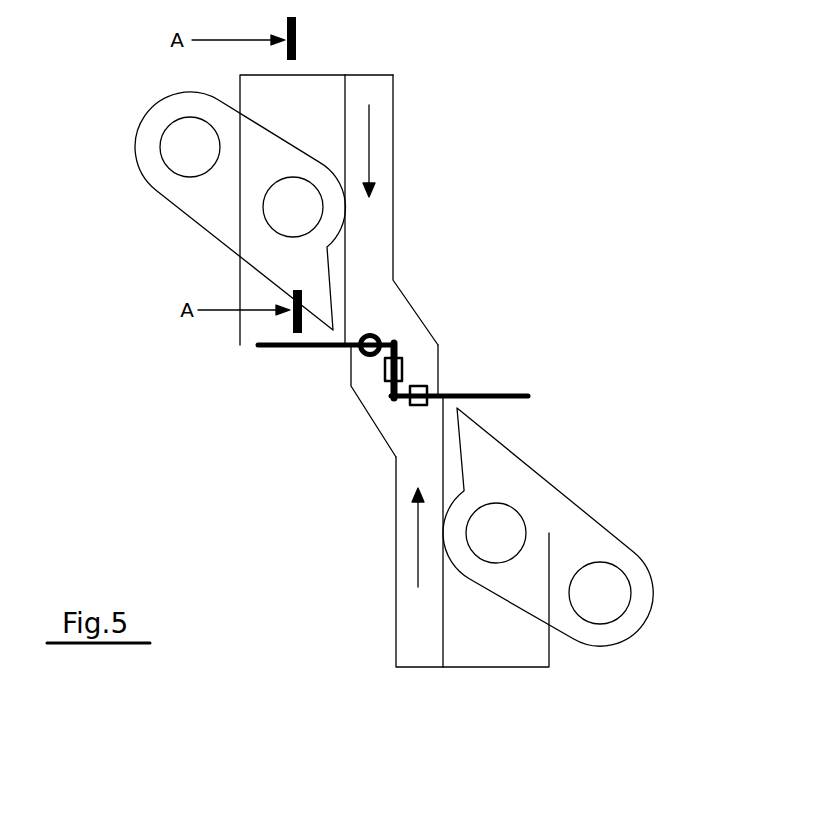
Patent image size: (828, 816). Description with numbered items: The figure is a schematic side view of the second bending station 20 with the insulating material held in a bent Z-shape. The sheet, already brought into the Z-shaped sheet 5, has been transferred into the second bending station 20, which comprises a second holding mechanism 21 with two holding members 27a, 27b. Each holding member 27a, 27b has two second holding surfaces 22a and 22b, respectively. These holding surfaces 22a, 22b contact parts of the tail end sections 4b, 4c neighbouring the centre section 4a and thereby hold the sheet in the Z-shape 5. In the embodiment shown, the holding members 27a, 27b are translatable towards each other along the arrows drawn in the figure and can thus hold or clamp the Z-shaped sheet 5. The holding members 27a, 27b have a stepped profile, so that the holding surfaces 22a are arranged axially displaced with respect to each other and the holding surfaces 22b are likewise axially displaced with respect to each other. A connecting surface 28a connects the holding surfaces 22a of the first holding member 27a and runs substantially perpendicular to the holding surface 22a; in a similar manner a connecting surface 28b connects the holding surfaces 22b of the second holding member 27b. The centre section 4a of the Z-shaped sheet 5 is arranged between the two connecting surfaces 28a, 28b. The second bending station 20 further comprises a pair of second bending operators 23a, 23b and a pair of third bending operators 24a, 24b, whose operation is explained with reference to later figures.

The second bending station 20 is at (470, 137).
The second holding mechanism 21 is at (415, 260).
The second holding surface 22a is at (351, 343).
The second holding surface 22b is at (362, 354).
The second bending operator 23a is at (263, 92).
The second bending operator 23b is at (498, 655).
The third bending operator 24a is at (183, 193).
The third bending operator 24b is at (590, 538).
The holding member 27a is at (372, 90).
The holding member 27b is at (412, 610).
The connecting surface 28a is at (409, 386).
The connecting surface 28b is at (385, 381).
The centre section 4a is at (392, 403).
The tail end section 4b is at (295, 350).
The tail end section 4c is at (514, 400).
The Z-shaped sheet 5 is at (493, 388).